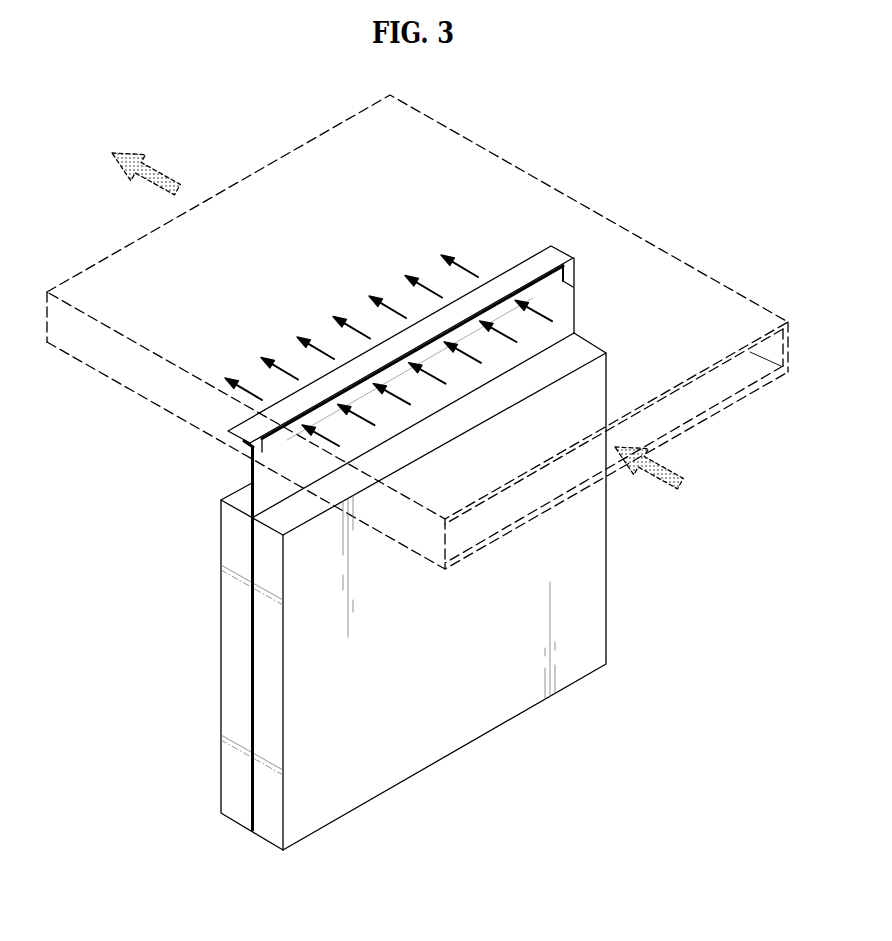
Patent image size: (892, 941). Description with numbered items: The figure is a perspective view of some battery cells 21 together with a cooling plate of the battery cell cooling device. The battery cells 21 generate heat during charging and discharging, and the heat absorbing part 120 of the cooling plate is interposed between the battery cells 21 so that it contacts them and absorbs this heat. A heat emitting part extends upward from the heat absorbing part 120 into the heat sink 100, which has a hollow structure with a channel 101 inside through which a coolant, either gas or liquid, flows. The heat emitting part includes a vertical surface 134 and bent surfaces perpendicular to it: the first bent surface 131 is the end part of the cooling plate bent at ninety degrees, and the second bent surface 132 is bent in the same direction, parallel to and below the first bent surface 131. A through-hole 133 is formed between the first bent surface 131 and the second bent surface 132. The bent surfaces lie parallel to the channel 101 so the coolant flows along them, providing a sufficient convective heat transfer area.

The heat sink 100 is at (695, 270).
The channel 101 is at (742, 368).
The battery cells 21 is at (271, 828).
The heat absorbing part 120 is at (252, 607).
The first bent surface 131 is at (519, 268).
The second bent surface 132 is at (556, 272).
The through-hole 133 is at (263, 440).
The vertical surface 134 is at (247, 446).